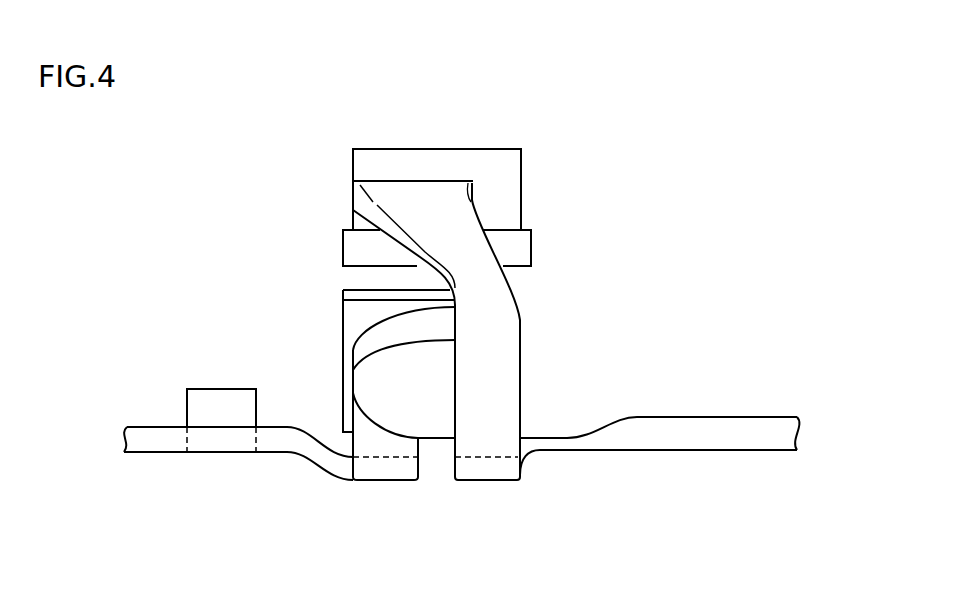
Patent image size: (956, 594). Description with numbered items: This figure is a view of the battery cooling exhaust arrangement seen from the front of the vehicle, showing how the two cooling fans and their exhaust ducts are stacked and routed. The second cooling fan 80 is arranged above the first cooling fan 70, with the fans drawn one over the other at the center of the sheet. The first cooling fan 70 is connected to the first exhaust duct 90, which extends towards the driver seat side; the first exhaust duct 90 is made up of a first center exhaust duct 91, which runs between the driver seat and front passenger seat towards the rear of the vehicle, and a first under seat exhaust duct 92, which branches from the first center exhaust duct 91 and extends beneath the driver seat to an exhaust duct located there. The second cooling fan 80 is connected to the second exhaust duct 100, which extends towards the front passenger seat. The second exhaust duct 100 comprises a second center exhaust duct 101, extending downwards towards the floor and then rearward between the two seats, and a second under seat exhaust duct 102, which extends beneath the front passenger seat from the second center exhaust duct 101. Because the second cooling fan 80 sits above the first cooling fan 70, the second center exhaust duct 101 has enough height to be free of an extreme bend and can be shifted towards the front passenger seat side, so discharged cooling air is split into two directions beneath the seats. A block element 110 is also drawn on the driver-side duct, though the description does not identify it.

The second cooling fan 80 is at (415, 162).
The first cooling fan 70 is at (393, 376).
The second exhaust duct 100 is at (665, 360).
The second center exhaust duct 101 is at (503, 367).
The second under seat exhaust duct 102 is at (643, 433).
The first exhaust duct 90 is at (385, 525).
The first center exhaust duct 91 is at (388, 470).
The first under seat exhaust duct 92 is at (273, 442).
The external connection member 110 is at (222, 402).